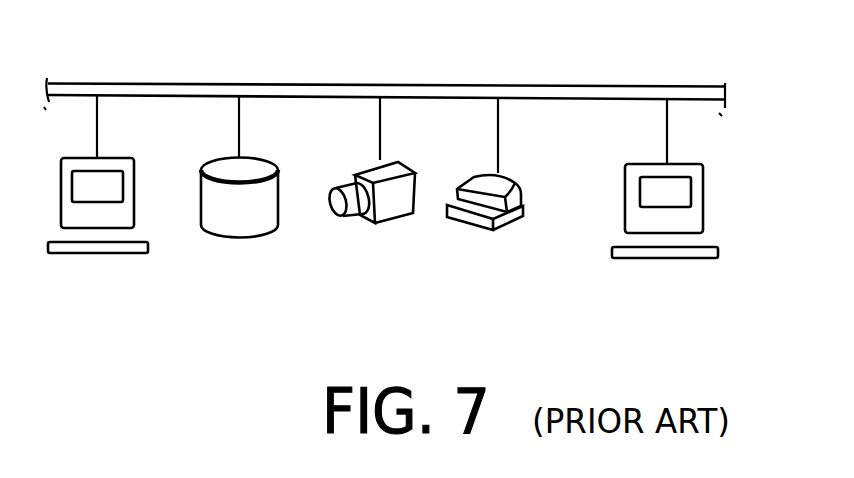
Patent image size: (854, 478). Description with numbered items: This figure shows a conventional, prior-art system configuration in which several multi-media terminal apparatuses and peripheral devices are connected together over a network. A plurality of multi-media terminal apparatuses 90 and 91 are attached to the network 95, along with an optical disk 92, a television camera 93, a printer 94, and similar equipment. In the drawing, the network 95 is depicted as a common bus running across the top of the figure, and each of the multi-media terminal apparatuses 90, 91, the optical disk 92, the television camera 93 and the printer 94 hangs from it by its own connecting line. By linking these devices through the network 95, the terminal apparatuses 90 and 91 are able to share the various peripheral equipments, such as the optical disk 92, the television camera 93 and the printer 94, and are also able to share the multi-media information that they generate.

The multi-media terminal apparatus 90 is at (103, 218).
The multi-media terminal apparatus 91 is at (668, 222).
The optical disk 92 is at (240, 222).
The television camera 93 is at (388, 210).
The printer 94 is at (513, 210).
The network 95 is at (606, 87).